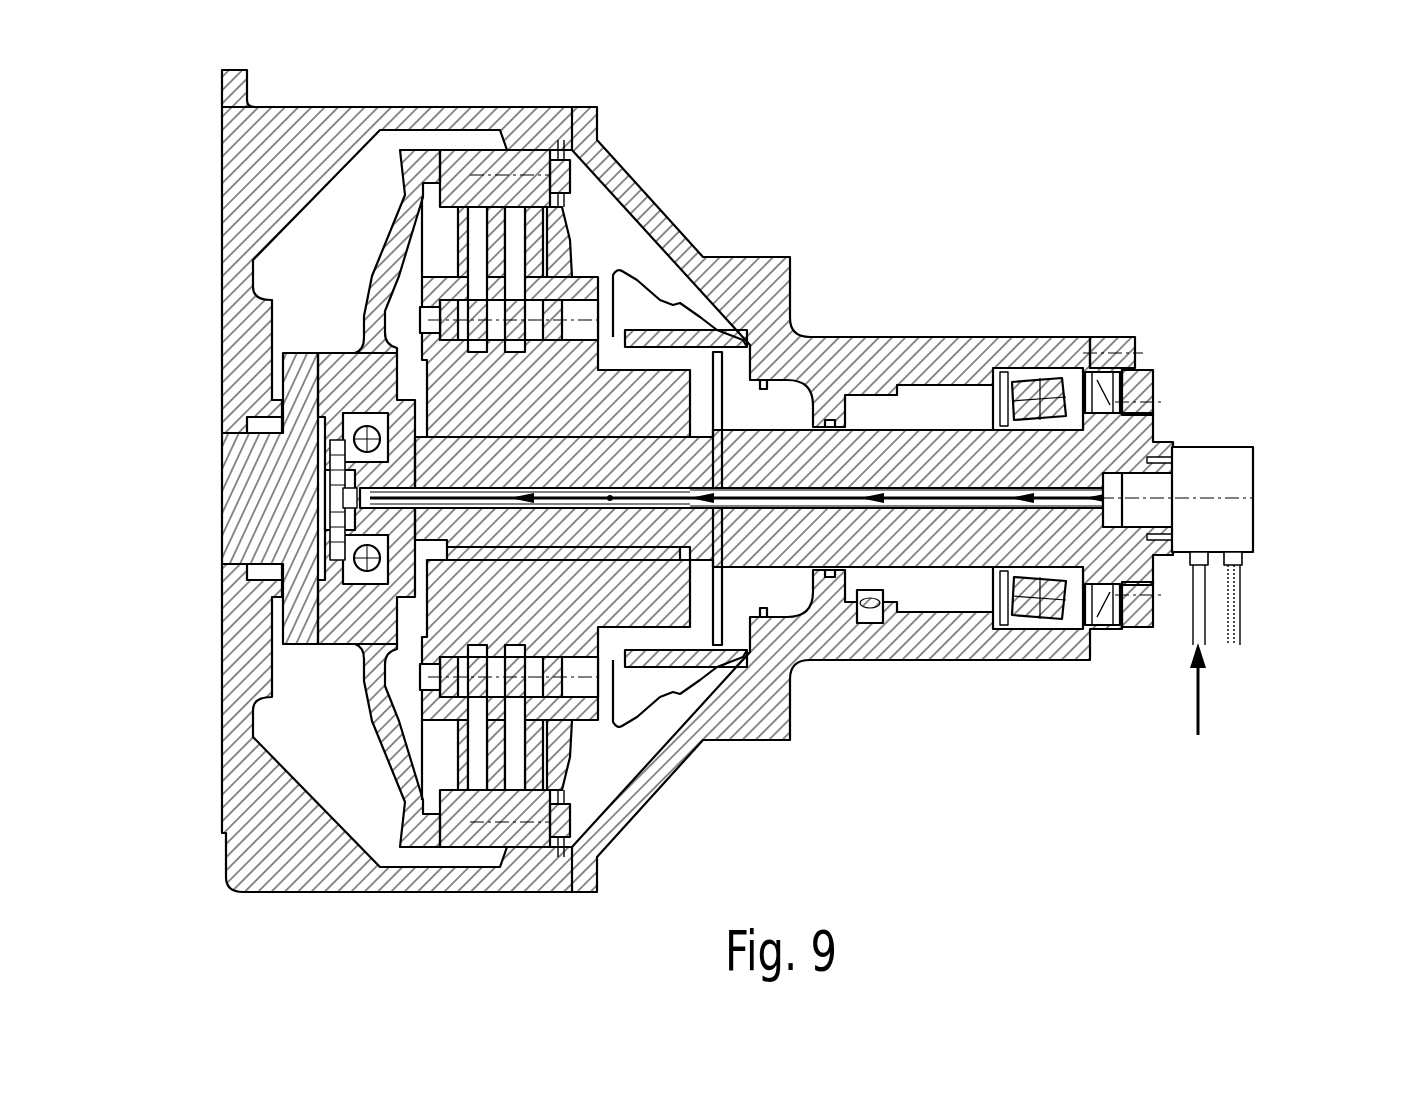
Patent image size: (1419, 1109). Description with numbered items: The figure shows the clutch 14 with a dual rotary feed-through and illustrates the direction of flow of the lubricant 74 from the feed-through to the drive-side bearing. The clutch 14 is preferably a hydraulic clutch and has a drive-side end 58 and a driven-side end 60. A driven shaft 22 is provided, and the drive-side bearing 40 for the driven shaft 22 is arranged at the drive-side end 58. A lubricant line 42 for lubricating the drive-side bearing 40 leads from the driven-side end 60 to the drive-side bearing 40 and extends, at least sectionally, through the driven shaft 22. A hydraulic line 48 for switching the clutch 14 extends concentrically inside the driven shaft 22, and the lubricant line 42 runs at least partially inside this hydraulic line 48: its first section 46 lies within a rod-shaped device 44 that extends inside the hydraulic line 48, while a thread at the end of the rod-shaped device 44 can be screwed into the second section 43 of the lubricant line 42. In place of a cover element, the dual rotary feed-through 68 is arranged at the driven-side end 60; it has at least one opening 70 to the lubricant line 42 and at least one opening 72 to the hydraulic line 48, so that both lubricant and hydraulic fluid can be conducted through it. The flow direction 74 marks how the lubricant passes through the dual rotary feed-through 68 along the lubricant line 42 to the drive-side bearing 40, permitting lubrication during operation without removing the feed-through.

The clutch 14 is at (807, 318).
The driven shaft 22 is at (930, 455).
The drive-side bearing 40 is at (300, 448).
The lubricant line 42 is at (920, 500).
The second section of the lubricant line 43 is at (615, 505).
The rod-shaped device 44 is at (975, 508).
The first section of the lubricant line 46 is at (1015, 395).
The hydraulic line 48 is at (1092, 352).
The drive-side end 58 is at (215, 533).
The driven-side end 60 is at (1255, 532).
The dual rotary feed-through 68 is at (1230, 460).
The opening to the lubricant line 70 is at (1196, 567).
The opening to the hydraulic line 72 is at (1242, 568).
The direction of flow of the lubricant 74 is at (1155, 378).